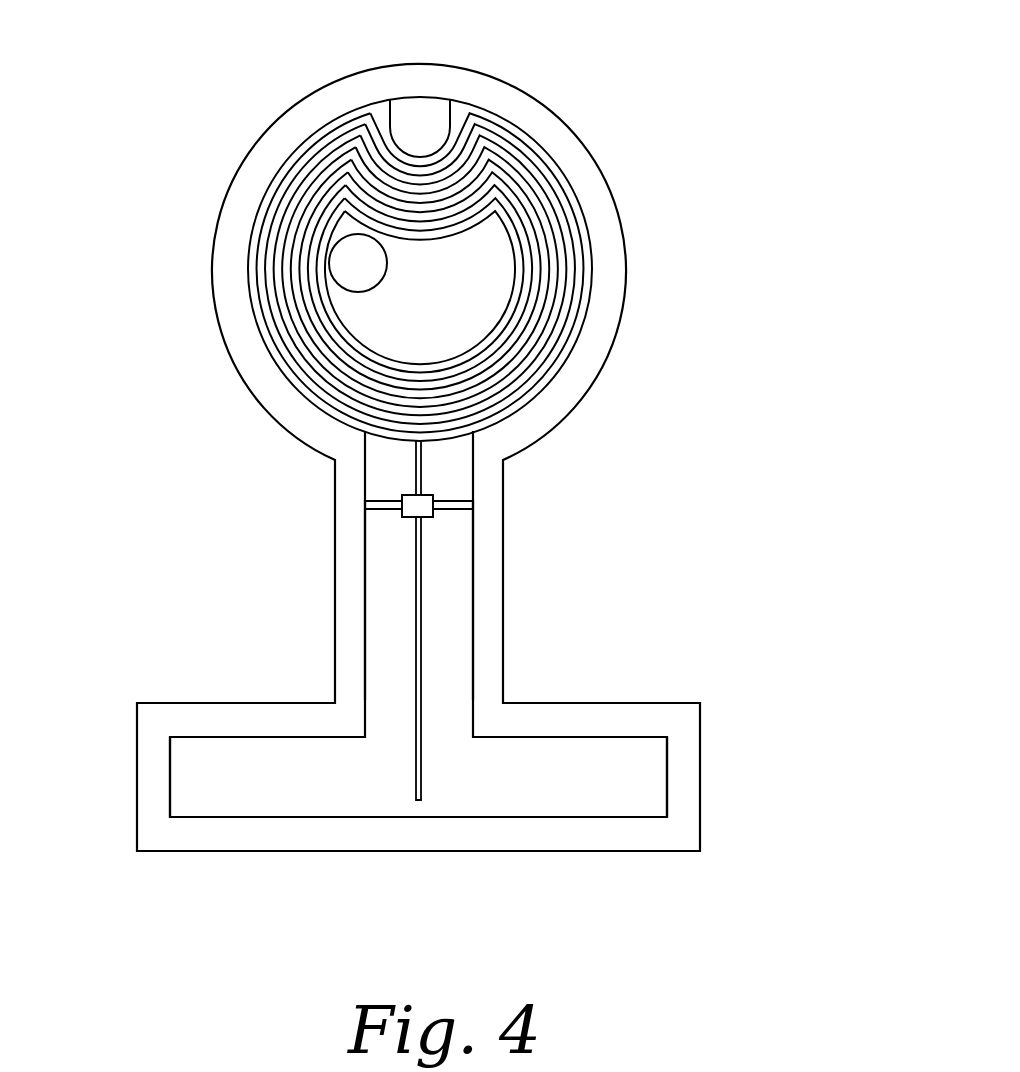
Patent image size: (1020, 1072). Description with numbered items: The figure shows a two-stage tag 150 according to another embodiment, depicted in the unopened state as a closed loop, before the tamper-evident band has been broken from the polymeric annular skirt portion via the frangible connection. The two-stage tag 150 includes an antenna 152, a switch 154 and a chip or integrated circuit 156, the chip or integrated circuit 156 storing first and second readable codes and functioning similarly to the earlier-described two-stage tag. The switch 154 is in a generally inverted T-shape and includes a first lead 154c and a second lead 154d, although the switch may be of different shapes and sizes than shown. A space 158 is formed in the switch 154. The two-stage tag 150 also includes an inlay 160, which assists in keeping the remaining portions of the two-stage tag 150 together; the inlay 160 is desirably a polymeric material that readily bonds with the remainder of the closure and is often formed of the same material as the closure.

The 2-stage tag 150 is at (675, 368).
The antenna 152 is at (438, 88).
The switch 154 is at (258, 820).
The first lead 154c is at (383, 613).
The second lead 154d is at (457, 603).
The chip or integrated circuit 156 is at (437, 498).
The space 158 is at (420, 782).
The inlay 160 is at (583, 138).